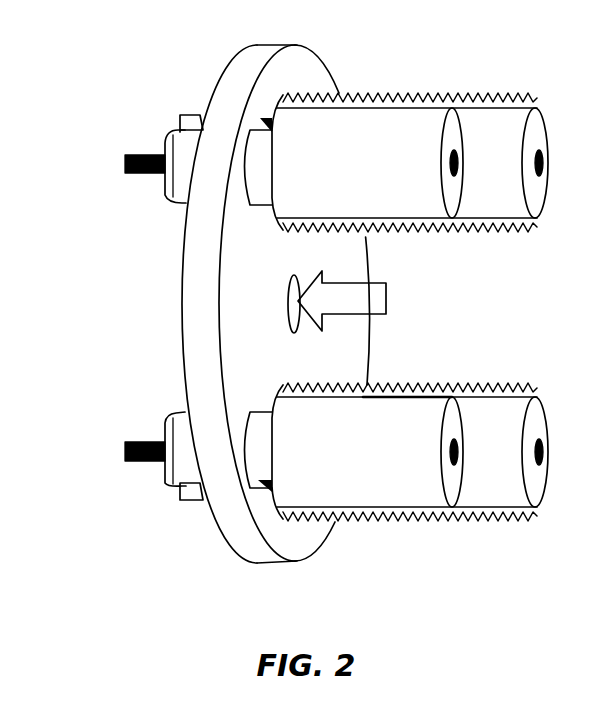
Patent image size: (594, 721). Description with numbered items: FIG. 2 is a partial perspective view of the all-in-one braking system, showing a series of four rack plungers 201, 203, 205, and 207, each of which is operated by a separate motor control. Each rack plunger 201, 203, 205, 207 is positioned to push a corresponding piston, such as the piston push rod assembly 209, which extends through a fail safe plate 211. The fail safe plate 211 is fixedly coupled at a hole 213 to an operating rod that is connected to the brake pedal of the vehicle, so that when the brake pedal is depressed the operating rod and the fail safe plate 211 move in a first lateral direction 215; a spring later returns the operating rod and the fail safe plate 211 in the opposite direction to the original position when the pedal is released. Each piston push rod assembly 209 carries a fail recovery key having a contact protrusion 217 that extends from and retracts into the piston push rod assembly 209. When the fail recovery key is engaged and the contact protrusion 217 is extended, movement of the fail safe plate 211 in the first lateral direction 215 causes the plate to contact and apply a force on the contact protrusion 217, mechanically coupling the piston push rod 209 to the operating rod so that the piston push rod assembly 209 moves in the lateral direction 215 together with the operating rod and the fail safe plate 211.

The rack plunger 201 is at (523, 110).
The rack plunger 203 is at (383, 120).
The rack plunger 205 is at (532, 508).
The rack plunger 207 is at (375, 497).
The piston push rod assembly 209 is at (156, 490).
The fail safe plate 211 is at (234, 79).
The hole 213 is at (287, 286).
The first lateral direction 215 is at (389, 314).
The contact protrusion 217 is at (190, 510).